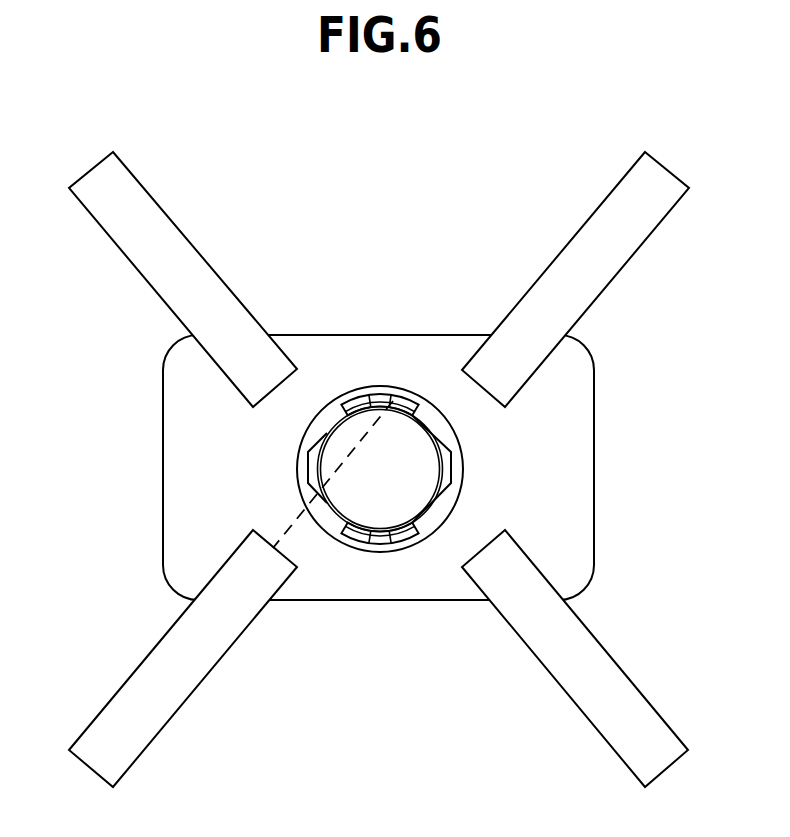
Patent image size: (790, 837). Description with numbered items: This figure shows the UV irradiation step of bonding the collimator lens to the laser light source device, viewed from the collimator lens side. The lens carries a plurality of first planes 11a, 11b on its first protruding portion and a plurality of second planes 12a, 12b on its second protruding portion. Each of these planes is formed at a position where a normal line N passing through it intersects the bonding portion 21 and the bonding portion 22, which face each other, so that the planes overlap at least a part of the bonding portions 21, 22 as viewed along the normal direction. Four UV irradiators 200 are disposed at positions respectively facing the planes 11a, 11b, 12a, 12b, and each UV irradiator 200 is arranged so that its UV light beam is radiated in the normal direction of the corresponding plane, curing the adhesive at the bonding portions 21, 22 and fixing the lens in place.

The UV irradiator 200 is at (138, 242).
The first plane 11a is at (307, 450).
The first plane 11b is at (308, 488).
The bonding portion 21 is at (383, 400).
The bonding portion 22 is at (378, 535).
The second plane 12a is at (440, 442).
The second plane 12b is at (440, 493).
The normal line N is at (350, 468).